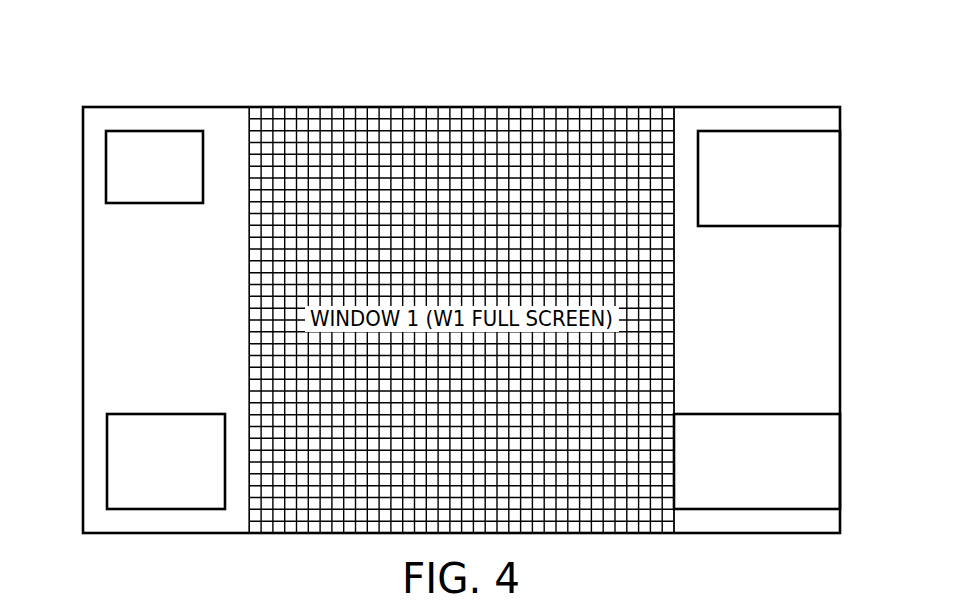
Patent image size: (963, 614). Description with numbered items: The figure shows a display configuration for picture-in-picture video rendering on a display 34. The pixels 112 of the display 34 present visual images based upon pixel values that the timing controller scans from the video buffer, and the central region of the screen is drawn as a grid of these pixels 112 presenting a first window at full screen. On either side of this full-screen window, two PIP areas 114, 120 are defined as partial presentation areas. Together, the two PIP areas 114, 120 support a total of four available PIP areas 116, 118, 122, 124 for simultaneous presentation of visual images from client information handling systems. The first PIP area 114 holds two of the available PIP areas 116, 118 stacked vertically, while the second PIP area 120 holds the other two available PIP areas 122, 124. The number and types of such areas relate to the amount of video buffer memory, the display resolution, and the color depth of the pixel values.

The display 34 is at (505, 80).
The pixels 112 is at (397, 125).
The PIP area 114 is at (143, 342).
The available PIP area 116 is at (106, 166).
The available PIP area 118 is at (107, 461).
The PIP area 120 is at (780, 355).
The available PIP area 122 is at (830, 177).
The available PIP area 124 is at (830, 462).